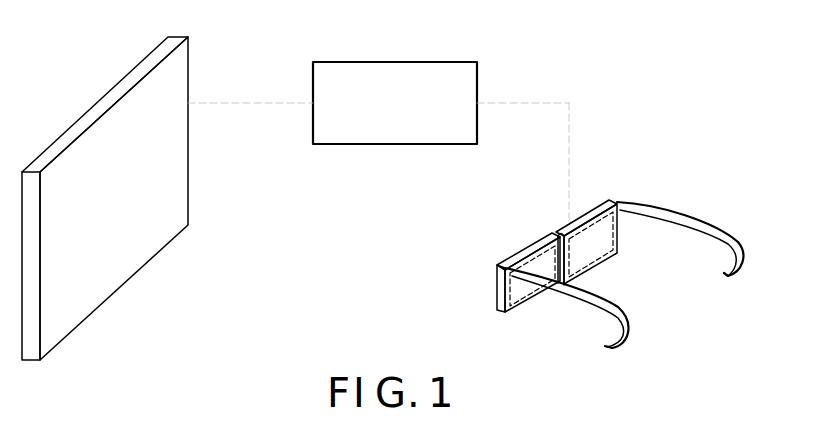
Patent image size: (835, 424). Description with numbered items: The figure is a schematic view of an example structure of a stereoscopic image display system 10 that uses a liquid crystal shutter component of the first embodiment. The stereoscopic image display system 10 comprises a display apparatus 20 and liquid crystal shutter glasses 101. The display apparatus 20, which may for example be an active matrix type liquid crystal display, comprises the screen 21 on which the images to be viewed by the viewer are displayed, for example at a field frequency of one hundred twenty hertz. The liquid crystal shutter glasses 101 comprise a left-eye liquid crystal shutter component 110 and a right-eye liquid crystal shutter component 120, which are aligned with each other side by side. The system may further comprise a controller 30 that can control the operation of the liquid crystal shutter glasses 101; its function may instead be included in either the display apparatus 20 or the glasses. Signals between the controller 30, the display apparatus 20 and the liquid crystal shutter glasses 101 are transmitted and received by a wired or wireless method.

The stereoscopic image display system 10 is at (648, 80).
The display apparatus 20 is at (117, 198).
The screen 21 is at (130, 232).
The controller 30 is at (396, 62).
The liquid crystal shutter glasses 101 is at (631, 242).
The liquid crystal shutter component 110 is at (530, 247).
The liquid crystal shutter component 120 is at (589, 213).